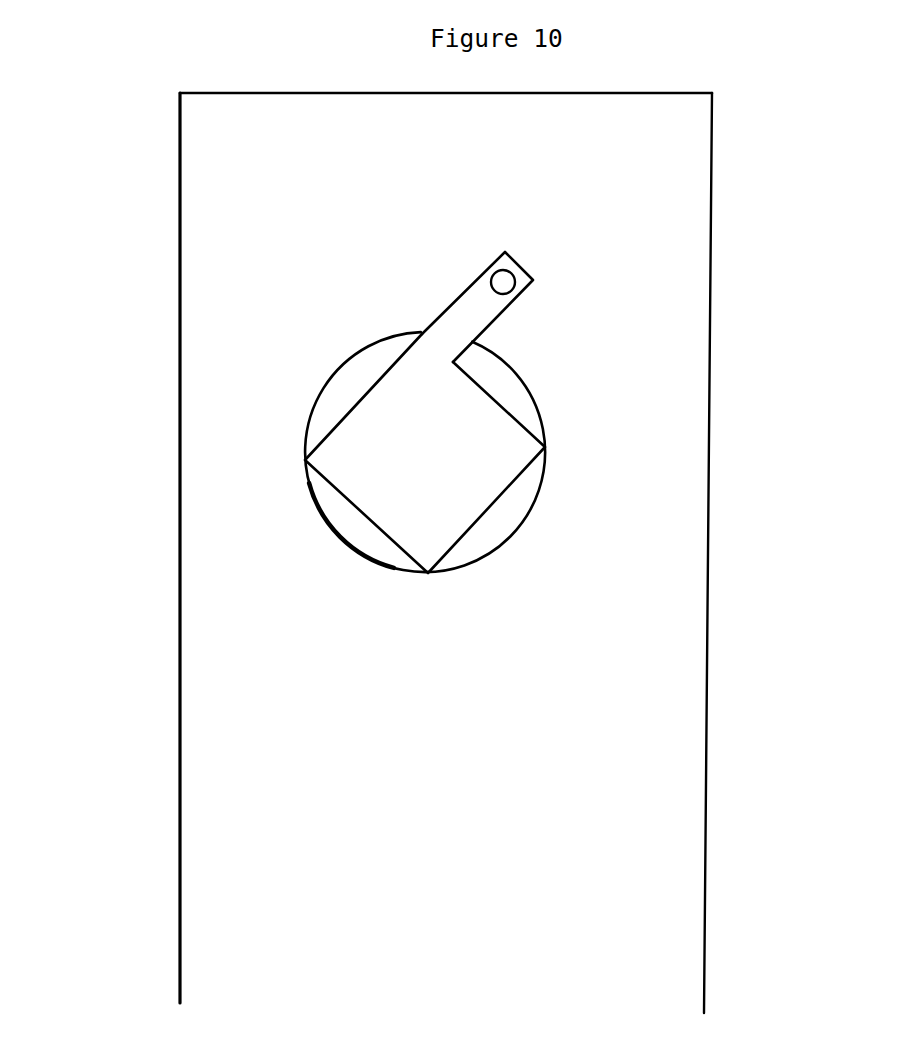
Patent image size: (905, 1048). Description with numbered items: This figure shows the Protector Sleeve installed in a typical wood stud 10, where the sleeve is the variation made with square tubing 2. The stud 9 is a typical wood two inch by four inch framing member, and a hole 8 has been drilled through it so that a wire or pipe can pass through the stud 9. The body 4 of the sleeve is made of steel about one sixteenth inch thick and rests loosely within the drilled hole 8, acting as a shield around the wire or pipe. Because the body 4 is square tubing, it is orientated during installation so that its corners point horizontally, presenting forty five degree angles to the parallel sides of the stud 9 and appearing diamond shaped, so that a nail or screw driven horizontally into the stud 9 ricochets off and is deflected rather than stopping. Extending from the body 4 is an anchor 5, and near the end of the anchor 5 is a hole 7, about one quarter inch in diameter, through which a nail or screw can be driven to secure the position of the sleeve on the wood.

The Protector Sleeve variation made with square tubing 2 is at (463, 453).
The body of the Protector Sleeve 4 is at (508, 487).
The anchor 5 is at (617, 287).
The hole in anchor 7 is at (520, 280).
The hole drilled in wood framing stud 8 is at (510, 542).
The wood stud 9 is at (680, 848).
The Protector Sleeve installed in a typical wood stud 10 is at (412, 525).